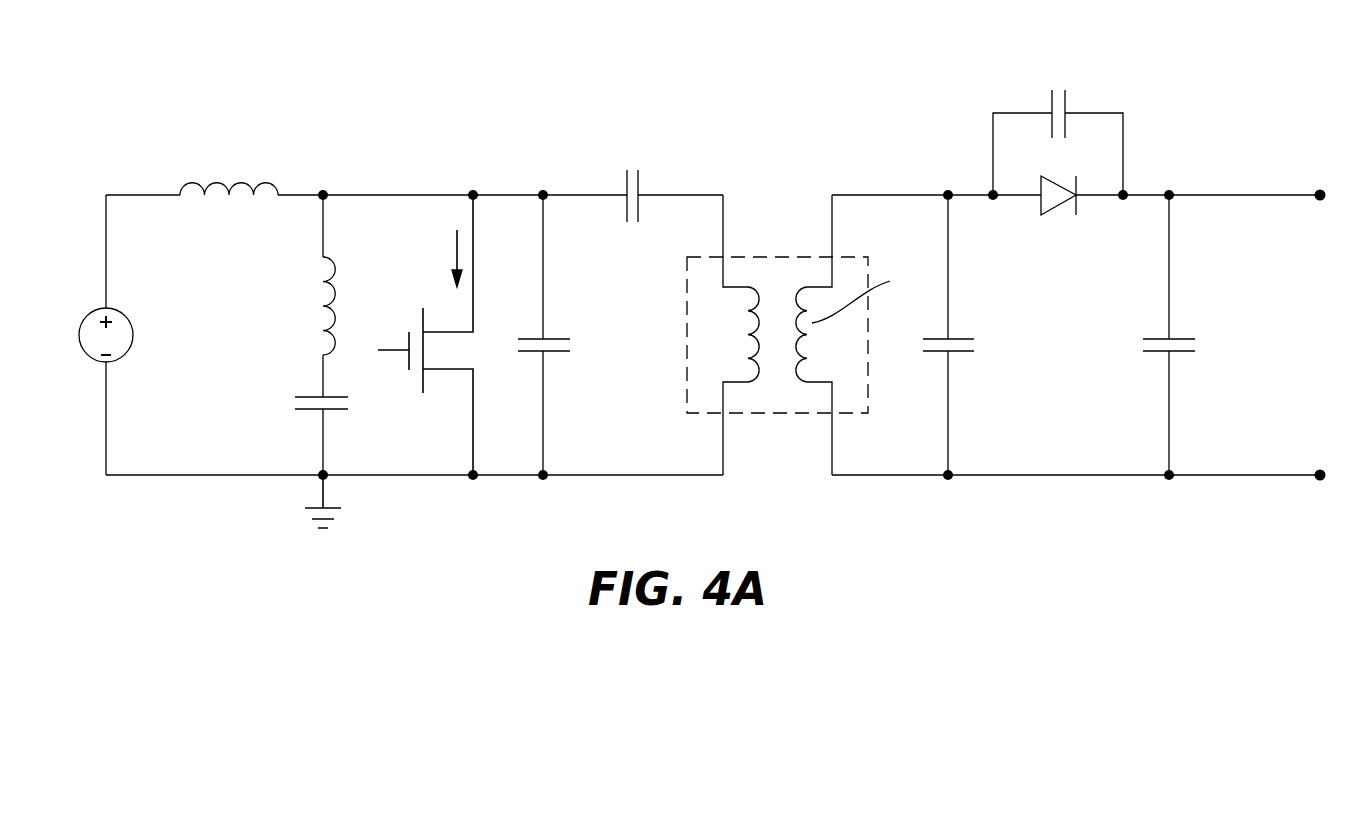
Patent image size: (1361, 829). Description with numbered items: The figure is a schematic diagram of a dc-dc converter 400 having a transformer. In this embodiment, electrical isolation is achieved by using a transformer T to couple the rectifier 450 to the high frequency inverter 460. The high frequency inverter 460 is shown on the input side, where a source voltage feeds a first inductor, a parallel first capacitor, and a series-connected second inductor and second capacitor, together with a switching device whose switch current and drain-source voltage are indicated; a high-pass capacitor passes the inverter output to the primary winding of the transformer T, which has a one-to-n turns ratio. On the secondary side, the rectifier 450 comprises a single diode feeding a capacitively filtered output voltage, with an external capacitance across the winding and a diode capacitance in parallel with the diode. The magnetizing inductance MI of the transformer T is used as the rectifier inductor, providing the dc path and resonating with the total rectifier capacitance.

The converter 400 is at (543, 92).
The high frequency inverter 460 is at (405, 237).
The rectifier 450 is at (1145, 236).